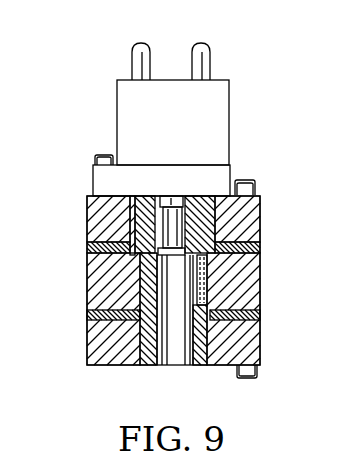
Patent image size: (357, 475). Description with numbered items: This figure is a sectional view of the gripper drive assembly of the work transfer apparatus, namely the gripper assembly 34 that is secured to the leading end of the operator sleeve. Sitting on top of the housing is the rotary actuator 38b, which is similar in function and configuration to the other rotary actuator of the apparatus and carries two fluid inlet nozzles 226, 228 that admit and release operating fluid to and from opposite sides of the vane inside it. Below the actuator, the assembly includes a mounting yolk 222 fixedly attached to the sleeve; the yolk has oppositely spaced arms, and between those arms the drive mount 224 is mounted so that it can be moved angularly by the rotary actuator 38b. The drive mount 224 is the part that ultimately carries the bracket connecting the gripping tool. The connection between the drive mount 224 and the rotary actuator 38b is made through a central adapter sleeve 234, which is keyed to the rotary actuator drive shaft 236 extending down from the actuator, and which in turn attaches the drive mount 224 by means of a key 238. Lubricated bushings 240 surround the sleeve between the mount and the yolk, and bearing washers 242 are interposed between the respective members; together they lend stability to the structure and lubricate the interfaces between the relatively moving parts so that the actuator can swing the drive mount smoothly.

The gripper assembly 34 is at (72, 283).
The rotary actuator 38b is at (229, 122).
The fluid inlet nozzle 226 is at (203, 45).
The fluid inlet nozzle 228 is at (140, 47).
The mounting yolk 222 is at (93, 205).
The drive mount 224 is at (250, 297).
The adapter sleeve 234 is at (152, 367).
The rotary actuator drive shaft 236 is at (180, 229).
The key 238 is at (207, 287).
The lubricated bushing 240 is at (238, 199).
The bearing washer 242 is at (87, 249).